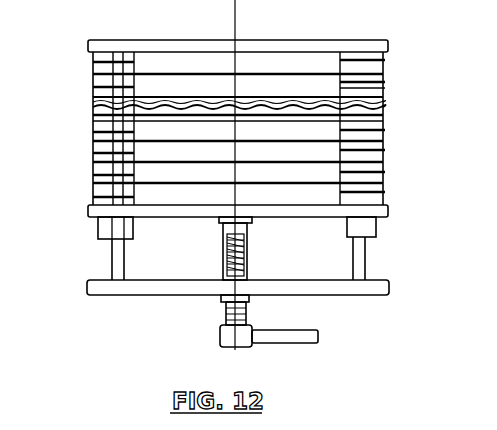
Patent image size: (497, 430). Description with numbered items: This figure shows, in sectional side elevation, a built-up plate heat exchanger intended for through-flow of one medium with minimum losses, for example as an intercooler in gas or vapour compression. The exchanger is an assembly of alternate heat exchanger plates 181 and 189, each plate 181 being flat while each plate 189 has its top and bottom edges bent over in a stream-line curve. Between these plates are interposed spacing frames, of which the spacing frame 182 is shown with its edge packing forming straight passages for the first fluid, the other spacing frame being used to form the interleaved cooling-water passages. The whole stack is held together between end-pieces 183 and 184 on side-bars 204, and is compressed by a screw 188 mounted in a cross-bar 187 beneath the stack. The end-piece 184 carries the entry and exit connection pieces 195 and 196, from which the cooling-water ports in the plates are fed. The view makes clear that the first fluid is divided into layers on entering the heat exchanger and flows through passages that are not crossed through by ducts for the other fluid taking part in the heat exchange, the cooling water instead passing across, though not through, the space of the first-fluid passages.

The end-piece 183 is at (308, 40).
The heat exchanger plate 181 is at (383, 72).
The heat exchanger plate 189 is at (383, 92).
The spacing frame 182 is at (320, 130).
The end-piece 184 is at (284, 211).
The connection piece 196 is at (105, 232).
The connection piece 195 is at (370, 232).
The side-bar 204 is at (366, 264).
The cross-bar 187 is at (357, 285).
The screw 188 is at (243, 338).